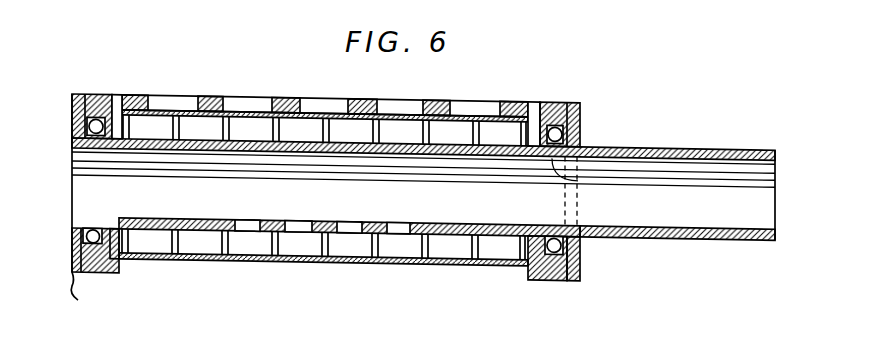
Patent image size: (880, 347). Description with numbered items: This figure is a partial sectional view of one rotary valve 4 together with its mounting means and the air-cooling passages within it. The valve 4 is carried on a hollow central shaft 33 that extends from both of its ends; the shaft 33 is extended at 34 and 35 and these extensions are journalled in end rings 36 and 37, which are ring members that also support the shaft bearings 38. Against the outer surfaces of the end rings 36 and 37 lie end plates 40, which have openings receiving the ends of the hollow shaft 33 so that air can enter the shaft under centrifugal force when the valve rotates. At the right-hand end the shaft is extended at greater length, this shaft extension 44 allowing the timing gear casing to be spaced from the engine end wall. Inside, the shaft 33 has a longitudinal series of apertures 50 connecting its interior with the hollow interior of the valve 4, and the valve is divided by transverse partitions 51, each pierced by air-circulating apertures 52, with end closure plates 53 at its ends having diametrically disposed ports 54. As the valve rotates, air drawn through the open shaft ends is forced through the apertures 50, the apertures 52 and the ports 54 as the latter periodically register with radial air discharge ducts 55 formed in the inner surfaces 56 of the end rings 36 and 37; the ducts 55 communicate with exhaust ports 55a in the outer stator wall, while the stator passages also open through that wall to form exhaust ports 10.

The rotary valve 4 is at (248, 265).
The exhaust port 10 is at (233, 100).
The hollow central shaft 33 is at (88, 194).
The shaft extension 34 is at (98, 150).
The shaft extension 35 is at (580, 172).
The end ring 36 is at (94, 97).
The end ring 37 is at (582, 118).
The shaft bearing 38 is at (578, 250).
The end plate 40 is at (86, 276).
The shaft extension 44 is at (724, 165).
The aperture 50 is at (294, 223).
The transverse partition 51 is at (472, 128).
The air-circulating aperture 52 is at (325, 122).
The end closure plate 53 is at (126, 240).
The port 54 is at (130, 122).
The radial air discharge duct 55 is at (118, 95).
The exhaust port 55a is at (150, 94).
The inner surface 56 is at (558, 112).